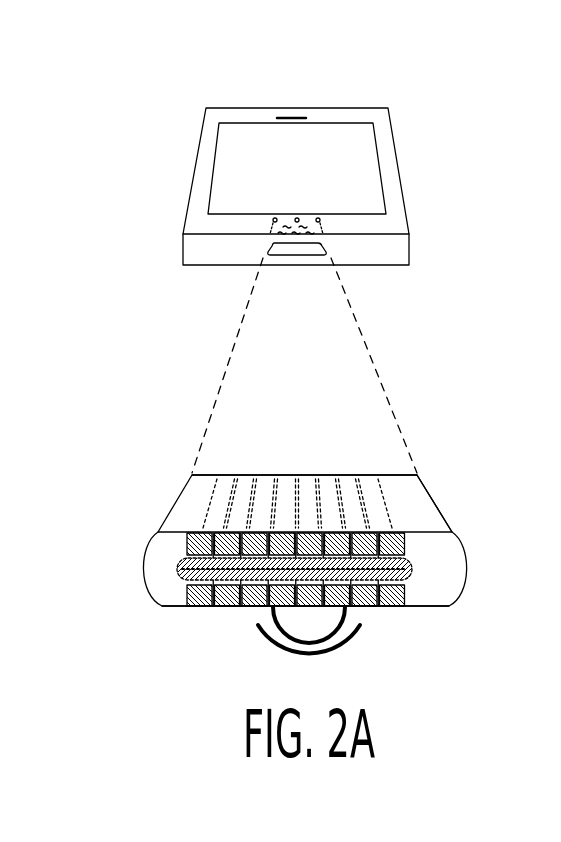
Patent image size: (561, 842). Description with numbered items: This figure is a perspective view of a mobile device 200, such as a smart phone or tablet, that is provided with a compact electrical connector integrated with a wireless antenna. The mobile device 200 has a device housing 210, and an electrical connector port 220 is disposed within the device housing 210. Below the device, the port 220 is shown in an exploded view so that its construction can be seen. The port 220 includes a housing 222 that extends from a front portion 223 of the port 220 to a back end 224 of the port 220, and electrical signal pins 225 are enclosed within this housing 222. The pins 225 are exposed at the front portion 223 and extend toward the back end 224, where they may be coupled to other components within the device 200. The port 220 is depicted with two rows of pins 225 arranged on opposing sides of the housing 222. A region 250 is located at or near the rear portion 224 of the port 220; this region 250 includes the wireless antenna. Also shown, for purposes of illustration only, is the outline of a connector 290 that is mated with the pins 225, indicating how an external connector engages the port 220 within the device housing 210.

The mobile device 200 is at (186, 119).
The device housing 210 is at (395, 143).
The port 220 is at (327, 251).
The housing 222 is at (442, 507).
The front portion 223 is at (146, 603).
The back end 224 is at (179, 473).
The pins 225 is at (178, 547).
The region 250 is at (297, 464).
The connector 290 is at (412, 565).